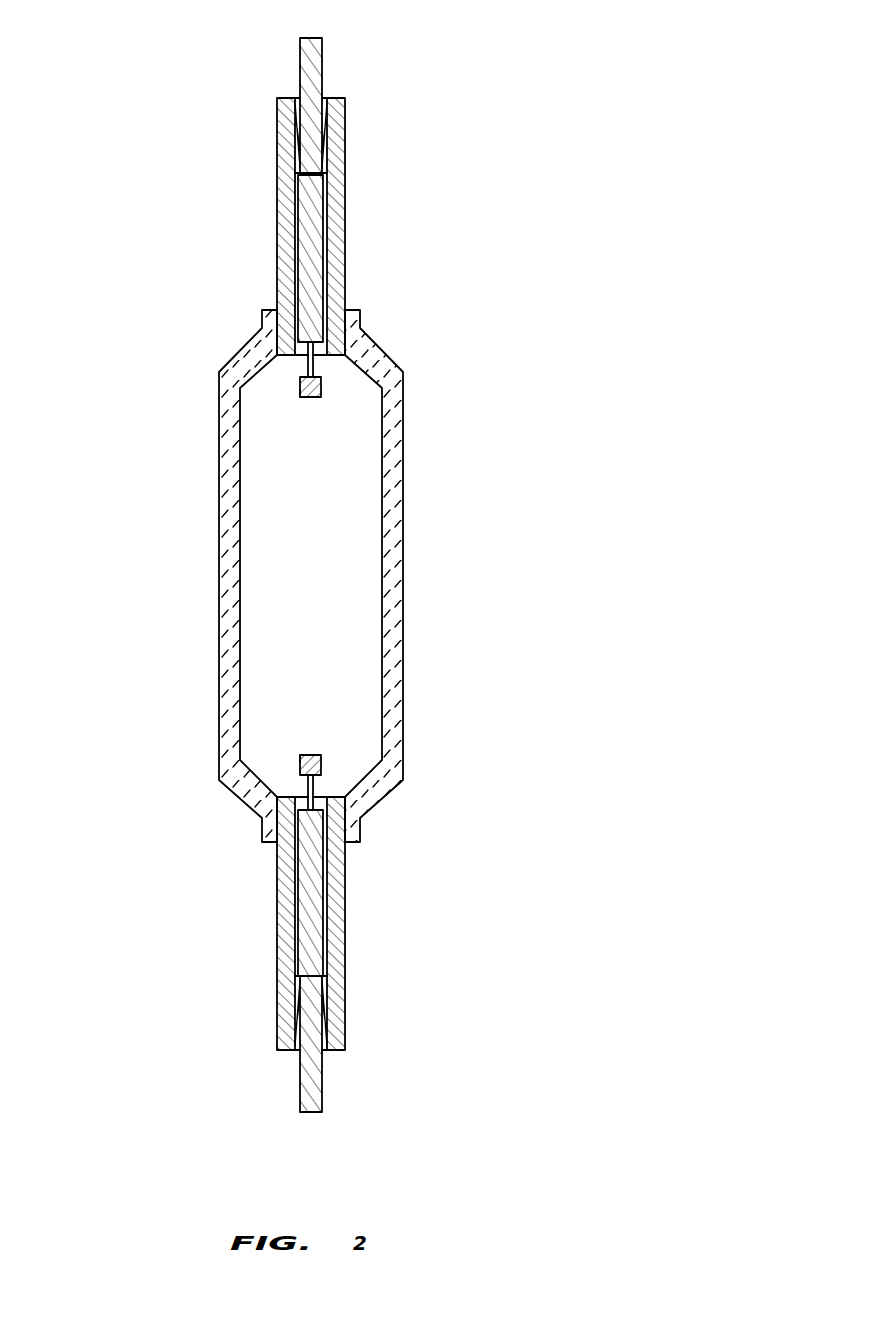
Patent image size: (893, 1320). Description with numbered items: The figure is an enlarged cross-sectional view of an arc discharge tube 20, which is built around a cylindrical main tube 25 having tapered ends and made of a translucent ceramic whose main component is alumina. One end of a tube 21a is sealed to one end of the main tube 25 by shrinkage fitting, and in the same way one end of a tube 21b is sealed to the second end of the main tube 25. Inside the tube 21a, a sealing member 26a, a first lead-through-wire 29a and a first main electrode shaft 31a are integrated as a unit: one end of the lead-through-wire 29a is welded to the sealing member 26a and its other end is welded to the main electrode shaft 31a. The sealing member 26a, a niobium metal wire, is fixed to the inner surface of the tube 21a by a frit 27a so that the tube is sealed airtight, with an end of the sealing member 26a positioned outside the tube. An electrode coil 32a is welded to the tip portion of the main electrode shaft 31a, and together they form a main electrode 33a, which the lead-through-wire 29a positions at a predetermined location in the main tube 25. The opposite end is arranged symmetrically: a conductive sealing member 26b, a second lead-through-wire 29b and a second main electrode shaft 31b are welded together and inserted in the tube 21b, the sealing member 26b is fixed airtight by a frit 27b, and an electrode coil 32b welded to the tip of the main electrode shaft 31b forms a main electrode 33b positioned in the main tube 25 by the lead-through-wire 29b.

The arc discharge tube 20 is at (314, 576).
The main tube 25 is at (405, 560).
The tube 21a is at (345, 155).
The tube 21b is at (345, 1023).
The sealing member 26a is at (323, 50).
The conductive sealing member 26b is at (322, 1103).
The frit 27a is at (298, 103).
The frit 27b is at (298, 1048).
The first lead-through-wire 29a is at (298, 245).
The second lead-through-wire 29b is at (325, 880).
The first main electrode shaft 31a is at (313, 368).
The second main electrode shaft 31b is at (317, 789).
The electrode coil 32a is at (322, 392).
The electrode coil 32b is at (323, 765).
The main electrode 33a is at (300, 397).
The main electrode 33b is at (302, 754).